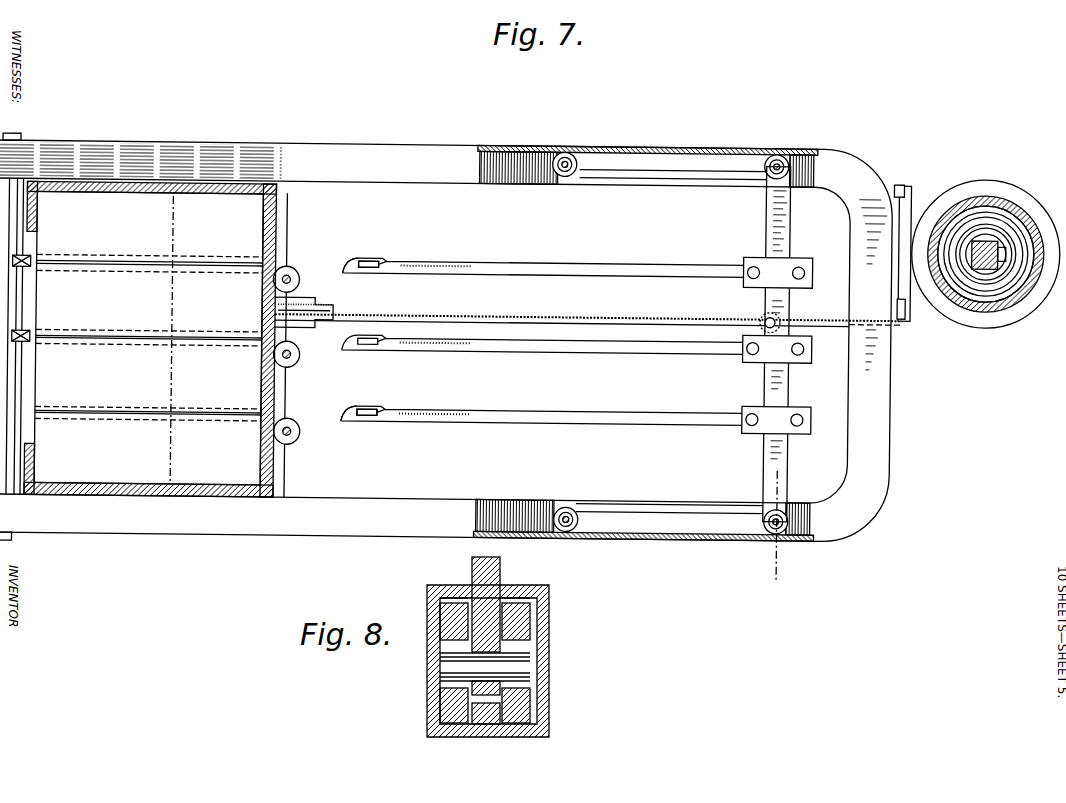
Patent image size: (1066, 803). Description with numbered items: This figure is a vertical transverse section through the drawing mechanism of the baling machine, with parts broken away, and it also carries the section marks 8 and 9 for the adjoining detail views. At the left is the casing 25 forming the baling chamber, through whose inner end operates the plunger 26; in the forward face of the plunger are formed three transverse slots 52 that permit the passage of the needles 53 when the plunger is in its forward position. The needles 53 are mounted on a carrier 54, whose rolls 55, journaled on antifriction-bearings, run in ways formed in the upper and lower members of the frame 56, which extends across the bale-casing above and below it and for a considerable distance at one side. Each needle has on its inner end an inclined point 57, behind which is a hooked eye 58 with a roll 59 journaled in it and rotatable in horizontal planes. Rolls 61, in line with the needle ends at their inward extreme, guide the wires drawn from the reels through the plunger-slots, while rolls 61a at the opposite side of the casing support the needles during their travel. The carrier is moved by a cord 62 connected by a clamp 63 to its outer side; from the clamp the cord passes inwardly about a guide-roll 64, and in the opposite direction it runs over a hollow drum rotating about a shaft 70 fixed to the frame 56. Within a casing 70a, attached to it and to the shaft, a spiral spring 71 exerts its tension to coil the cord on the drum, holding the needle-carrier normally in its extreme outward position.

In FIG. 7, the frame 56 is at (398, 148).
In FIG. 8, the frame 56 is at (549, 671).
In FIG. 7, the rolls 55 is at (566, 145).
In FIG. 8, the rolls 55 is at (440, 710).
In FIG. 7, the carrier 54 is at (768, 211).
In FIG. 8, the carrier 54 is at (500, 572).
In FIG. 7, the needles 53 is at (574, 259).
In FIG. 7, the inclined point 57 is at (353, 254).
In FIG. 7, the hooked eye 58 is at (388, 260).
In FIG. 7, the roll 59 is at (368, 347).
In FIG. 7, the cord 62 is at (485, 312).
In FIG. 7, the clamp 63 is at (766, 307).
In FIG. 7, the guide-roll 64 is at (328, 306).
In FIG. 7, the rolls 61 is at (30, 332).
In FIG. 7, the rolls 61a is at (303, 357).
In FIG. 7, the casing 25 is at (174, 494).
In FIG. 7, the plunger 26 is at (142, 377).
In FIG. 7, the transverse slots 52 is at (207, 286).
In FIG. 7, the shaft 70 is at (985, 244).
In FIG. 7, the casing 70a is at (973, 190).
In FIG. 7, the spiral spring 71 is at (1014, 228).
In FIG. 7, the section line 9 is at (163, 337).
In FIG. 7, the section line 8 is at (769, 526).